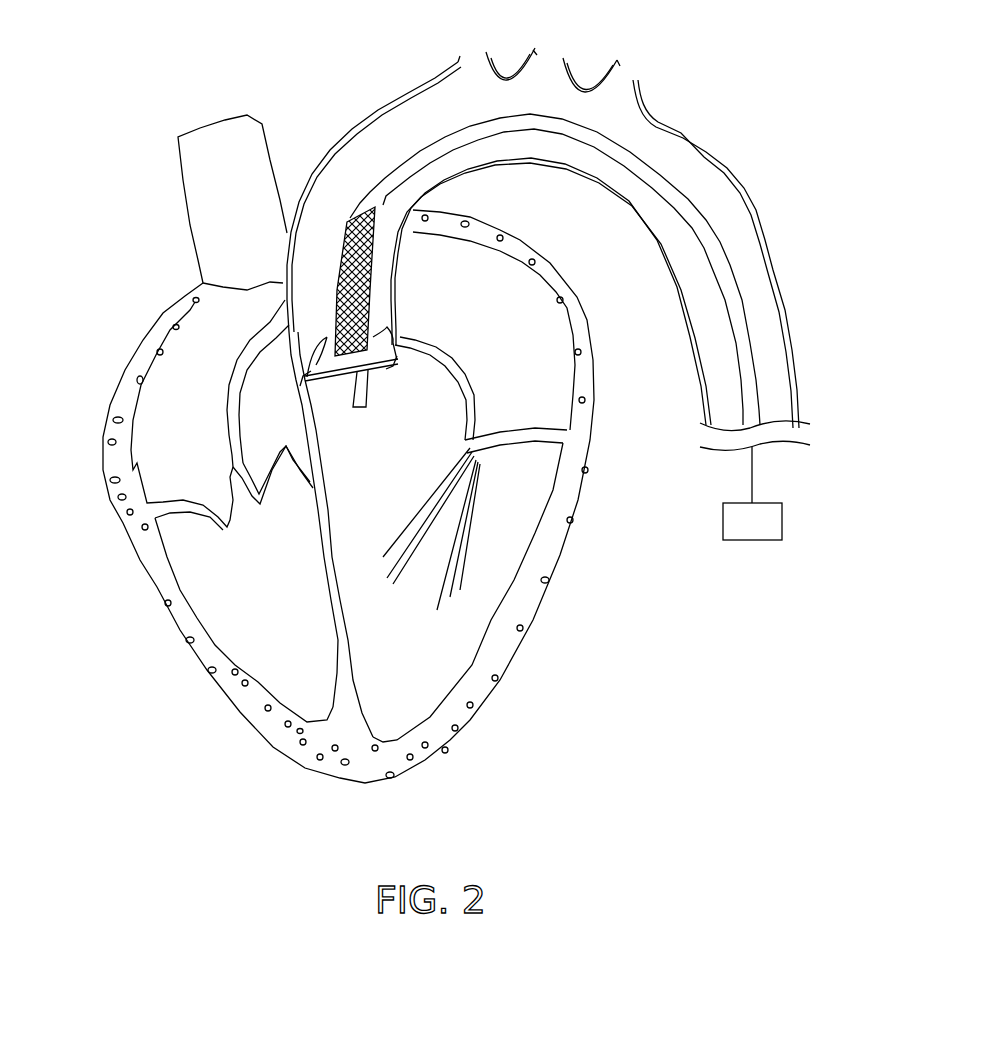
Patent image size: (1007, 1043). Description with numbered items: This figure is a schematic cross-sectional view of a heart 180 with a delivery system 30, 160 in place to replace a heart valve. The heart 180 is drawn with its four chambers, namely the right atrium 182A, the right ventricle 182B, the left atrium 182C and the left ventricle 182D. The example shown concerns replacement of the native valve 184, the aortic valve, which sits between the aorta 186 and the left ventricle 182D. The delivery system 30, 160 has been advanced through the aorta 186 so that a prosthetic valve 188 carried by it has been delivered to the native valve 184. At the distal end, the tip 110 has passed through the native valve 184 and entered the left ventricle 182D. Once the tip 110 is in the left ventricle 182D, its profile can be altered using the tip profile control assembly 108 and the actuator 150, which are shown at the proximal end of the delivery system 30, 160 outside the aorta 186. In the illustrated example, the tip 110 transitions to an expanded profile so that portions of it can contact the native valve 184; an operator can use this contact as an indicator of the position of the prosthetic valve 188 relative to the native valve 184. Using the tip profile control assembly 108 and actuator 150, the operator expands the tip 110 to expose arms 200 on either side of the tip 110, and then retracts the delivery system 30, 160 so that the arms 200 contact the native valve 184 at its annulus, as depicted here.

The heart 180 is at (239, 47).
The right atrium 182A is at (206, 427).
The right ventricle 182B is at (260, 567).
The left atrium 182C is at (531, 337).
The left ventricle 182D is at (401, 517).
The native valve 184 is at (382, 330).
The aorta 186 is at (706, 150).
The prosthetic valve 188 is at (353, 220).
The delivery system 30 is at (605, 269).
The delivery system 160 is at (723, 251).
The tip 110 is at (367, 413).
The arms 200 is at (320, 383).
The tip profile control assembly 108 is at (755, 478).
The actuator 150 is at (772, 532).